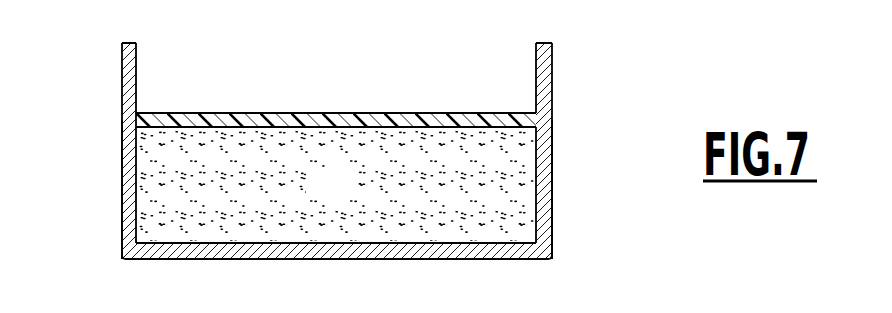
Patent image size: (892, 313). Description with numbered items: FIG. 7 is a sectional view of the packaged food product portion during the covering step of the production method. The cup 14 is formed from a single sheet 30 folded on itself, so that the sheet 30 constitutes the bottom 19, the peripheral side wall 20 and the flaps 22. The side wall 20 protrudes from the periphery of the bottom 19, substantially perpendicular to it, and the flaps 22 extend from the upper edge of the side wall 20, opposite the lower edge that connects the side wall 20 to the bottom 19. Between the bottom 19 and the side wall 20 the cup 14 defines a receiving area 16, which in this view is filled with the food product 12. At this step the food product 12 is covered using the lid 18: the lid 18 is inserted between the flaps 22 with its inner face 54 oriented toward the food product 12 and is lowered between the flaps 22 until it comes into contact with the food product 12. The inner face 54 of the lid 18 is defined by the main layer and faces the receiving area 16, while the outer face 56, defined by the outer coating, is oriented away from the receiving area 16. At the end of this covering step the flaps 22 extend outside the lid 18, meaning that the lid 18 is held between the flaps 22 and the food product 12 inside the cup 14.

The food product 12 is at (336, 185).
The cup 14 is at (356, 172).
The receiving area 16 is at (135, 221).
The lid 18 is at (336, 125).
The bottom 19 is at (452, 250).
The peripheral side wall 20 is at (128, 190).
The flaps 22 is at (128, 66).
The sheet 30 is at (545, 145).
The inner face 54 is at (428, 130).
The outer face 56 is at (418, 112).